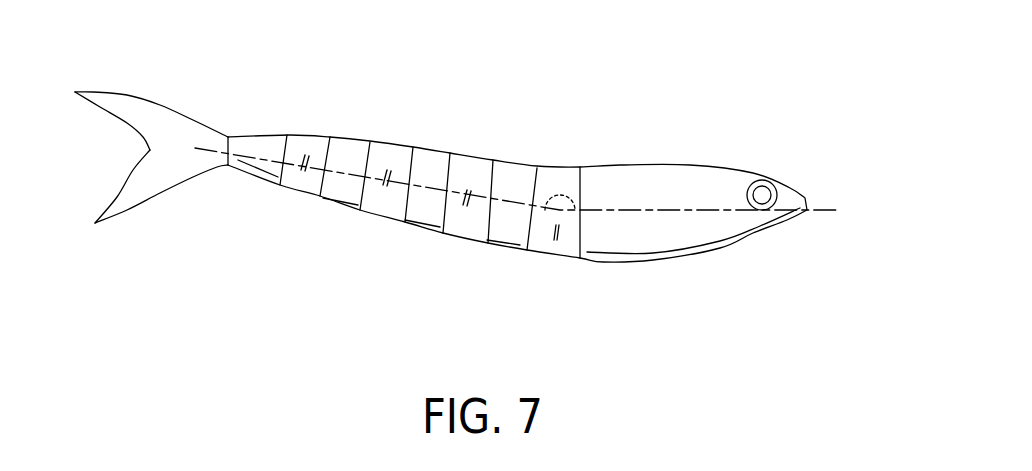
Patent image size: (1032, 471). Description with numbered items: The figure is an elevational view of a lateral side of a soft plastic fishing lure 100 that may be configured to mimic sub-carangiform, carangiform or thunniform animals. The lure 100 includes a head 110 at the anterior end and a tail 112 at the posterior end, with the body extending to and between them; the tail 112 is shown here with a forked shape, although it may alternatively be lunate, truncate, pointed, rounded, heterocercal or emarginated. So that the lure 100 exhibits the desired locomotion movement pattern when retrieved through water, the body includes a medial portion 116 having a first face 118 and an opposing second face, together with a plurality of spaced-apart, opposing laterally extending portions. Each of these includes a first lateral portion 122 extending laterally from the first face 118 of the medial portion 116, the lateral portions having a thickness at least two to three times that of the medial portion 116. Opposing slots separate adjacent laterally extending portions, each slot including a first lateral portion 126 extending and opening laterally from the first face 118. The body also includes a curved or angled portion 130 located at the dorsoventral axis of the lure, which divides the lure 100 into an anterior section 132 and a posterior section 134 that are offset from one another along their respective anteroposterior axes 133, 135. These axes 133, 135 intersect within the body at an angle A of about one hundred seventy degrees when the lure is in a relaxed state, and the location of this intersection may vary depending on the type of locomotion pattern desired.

The soft plastic fishing lure 100 is at (594, 88).
The head 110 is at (752, 240).
The tail 112 is at (122, 100).
The medial portion 116 is at (397, 140).
The first face 118 is at (300, 187).
The first lateral portion 122 is at (348, 143).
The first lateral portion of slot 126 is at (551, 275).
The curved or angled portion 130 is at (406, 198).
The anterior section 132 is at (740, 298).
The anteroposterior axis of anterior section 133 is at (665, 213).
The posterior section 134 is at (243, 295).
The anteroposterior axis of posterior section 135 is at (268, 157).
The angle A is at (555, 195).